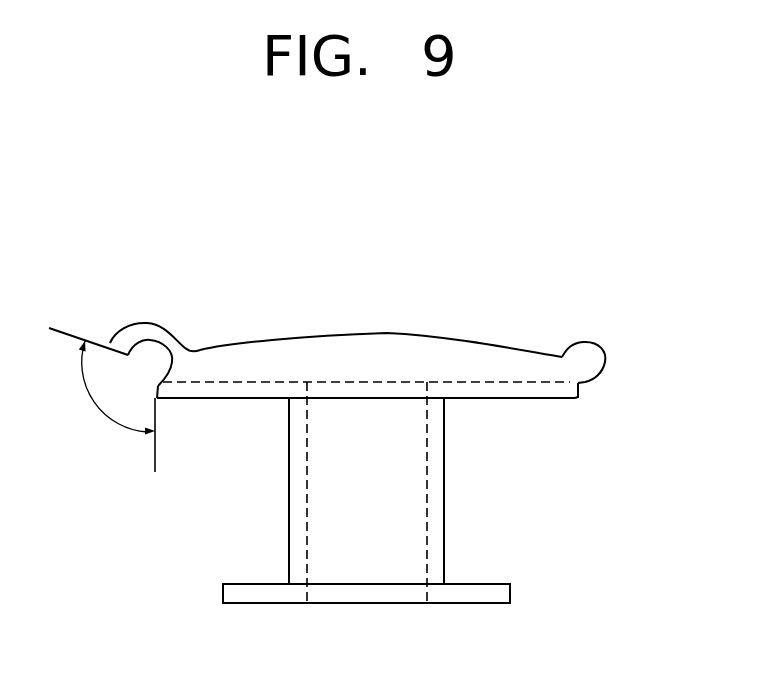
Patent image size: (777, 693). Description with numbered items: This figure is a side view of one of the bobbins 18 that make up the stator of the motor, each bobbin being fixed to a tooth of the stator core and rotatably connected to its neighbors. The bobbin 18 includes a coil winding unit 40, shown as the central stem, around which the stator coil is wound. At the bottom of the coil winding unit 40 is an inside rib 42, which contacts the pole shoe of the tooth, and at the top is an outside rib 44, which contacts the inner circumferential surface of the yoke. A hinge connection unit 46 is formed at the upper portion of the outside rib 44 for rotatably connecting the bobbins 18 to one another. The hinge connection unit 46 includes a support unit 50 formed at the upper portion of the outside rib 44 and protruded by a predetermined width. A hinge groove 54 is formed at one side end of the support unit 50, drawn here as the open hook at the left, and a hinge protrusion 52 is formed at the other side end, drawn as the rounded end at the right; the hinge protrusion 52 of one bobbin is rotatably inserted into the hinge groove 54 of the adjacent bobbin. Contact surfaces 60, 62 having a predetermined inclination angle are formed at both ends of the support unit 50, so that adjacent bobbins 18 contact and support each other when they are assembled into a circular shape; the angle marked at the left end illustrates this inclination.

The bobbin 18 is at (378, 361).
The coil winding unit 40 is at (444, 494).
The inside rib 42 is at (463, 590).
The outside rib 44 is at (498, 390).
The hinge connection unit 46 is at (433, 337).
The support unit 50 is at (360, 346).
The hinge protrusion 52 is at (588, 353).
The hinge groove 54 is at (150, 343).
The contact surface 60 is at (578, 391).
The contact surface 62 is at (156, 396).